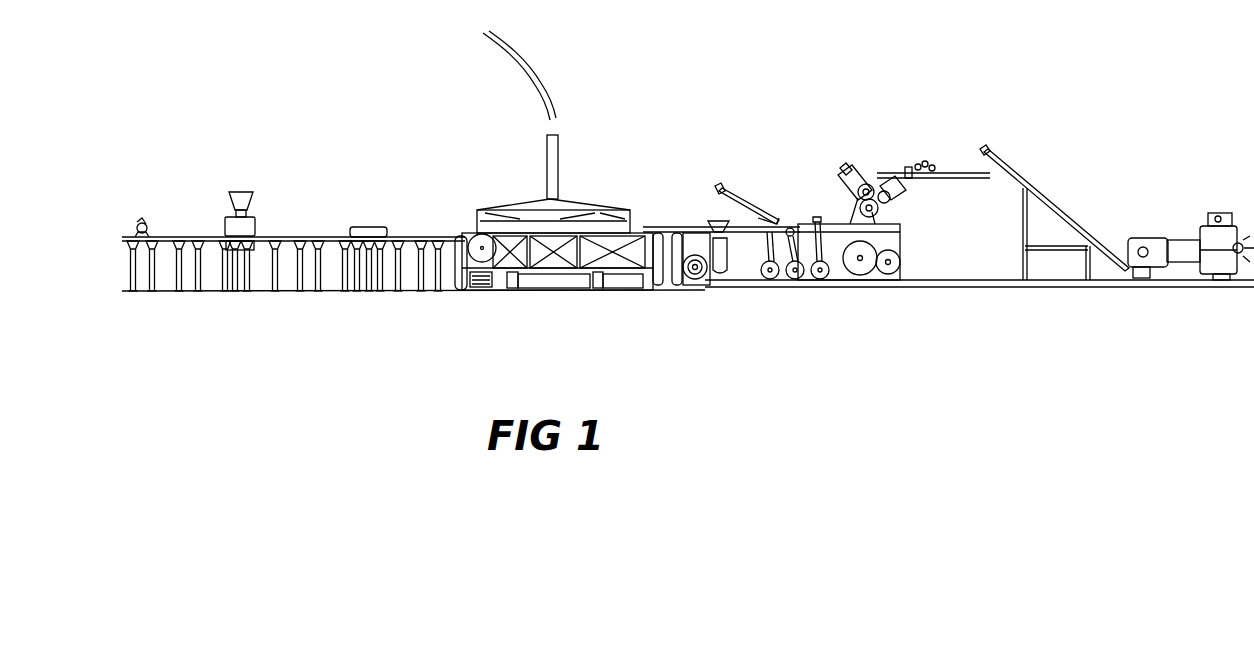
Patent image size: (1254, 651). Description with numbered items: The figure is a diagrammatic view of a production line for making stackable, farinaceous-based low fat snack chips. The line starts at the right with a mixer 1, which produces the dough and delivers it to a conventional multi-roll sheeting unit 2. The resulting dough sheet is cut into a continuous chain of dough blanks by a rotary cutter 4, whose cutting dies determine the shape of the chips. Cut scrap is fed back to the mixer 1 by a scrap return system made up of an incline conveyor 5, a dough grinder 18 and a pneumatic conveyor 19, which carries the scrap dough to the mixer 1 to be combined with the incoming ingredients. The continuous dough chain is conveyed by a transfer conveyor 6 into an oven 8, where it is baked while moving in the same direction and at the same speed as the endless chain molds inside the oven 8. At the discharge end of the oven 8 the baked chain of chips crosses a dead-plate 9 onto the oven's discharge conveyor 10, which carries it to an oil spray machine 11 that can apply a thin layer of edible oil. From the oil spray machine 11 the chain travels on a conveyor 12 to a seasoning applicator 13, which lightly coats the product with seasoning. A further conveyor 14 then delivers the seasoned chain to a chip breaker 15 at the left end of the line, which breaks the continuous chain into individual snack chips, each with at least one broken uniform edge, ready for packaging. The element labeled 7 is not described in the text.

The mixer 1 is at (1190, 240).
The multi-roll sheeting unit 2 is at (853, 168).
The rotary cutter 4 is at (817, 217).
The incline conveyor 5 is at (723, 188).
The transfer conveyor 6 is at (552, 268).
The transfer rollers 7 is at (670, 215).
The oven 8 is at (492, 152).
The dead-plate 9 is at (395, 236).
The discharge conveyor 10 is at (418, 236).
The oil spray machine 11 is at (368, 289).
The conveyor 12 is at (317, 236).
The seasoning applicator 13 is at (232, 192).
The conveyor 14 is at (195, 236).
The chip breaker 15 is at (138, 232).
The dough grinder 18 is at (742, 268).
The pneumatic conveyor 19 is at (957, 287).